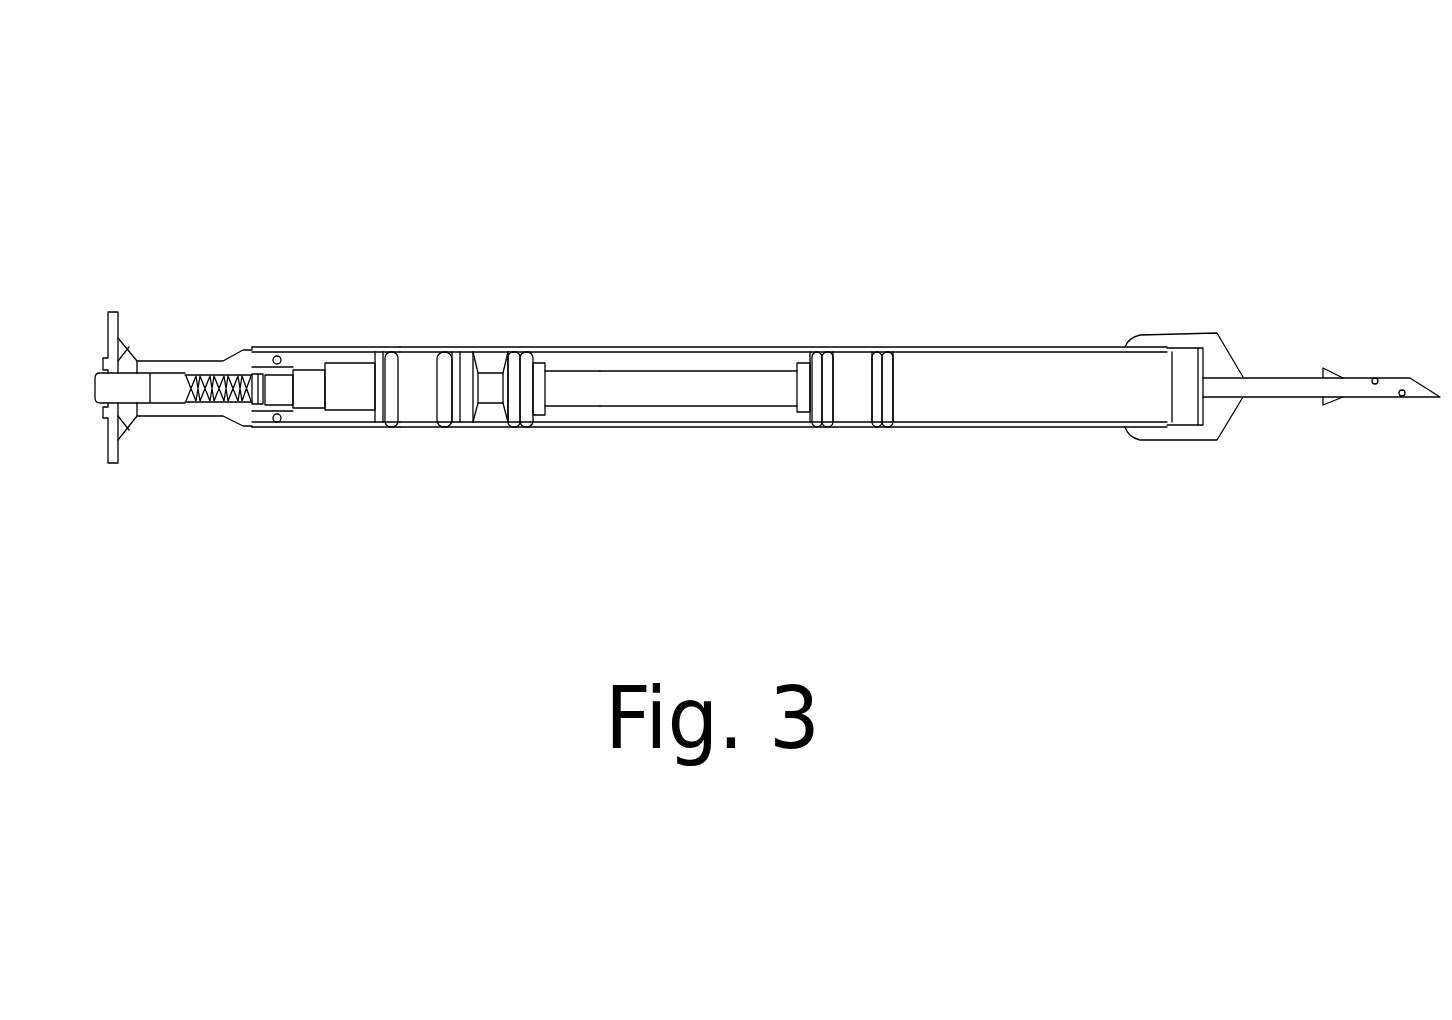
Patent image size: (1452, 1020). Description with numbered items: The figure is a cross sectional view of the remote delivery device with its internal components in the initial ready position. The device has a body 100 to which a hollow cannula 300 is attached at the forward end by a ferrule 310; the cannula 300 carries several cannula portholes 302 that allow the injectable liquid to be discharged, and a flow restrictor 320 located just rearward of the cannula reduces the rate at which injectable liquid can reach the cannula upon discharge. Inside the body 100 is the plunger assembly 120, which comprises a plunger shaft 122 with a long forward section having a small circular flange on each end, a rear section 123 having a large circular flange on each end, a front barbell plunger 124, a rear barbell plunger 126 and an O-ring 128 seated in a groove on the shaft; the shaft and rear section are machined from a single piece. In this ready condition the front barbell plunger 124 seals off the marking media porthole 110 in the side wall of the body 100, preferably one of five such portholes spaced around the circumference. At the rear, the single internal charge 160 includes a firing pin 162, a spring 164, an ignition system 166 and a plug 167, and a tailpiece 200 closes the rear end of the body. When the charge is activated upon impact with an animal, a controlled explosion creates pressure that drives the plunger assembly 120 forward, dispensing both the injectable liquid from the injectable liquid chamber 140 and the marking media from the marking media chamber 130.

The body 100 is at (945, 348).
The marking media porthole 110 is at (848, 352).
The plunger assembly 120 is at (890, 433).
The plunger shaft 122 is at (718, 382).
The rear section 123 is at (488, 385).
The front barbell plunger 124 is at (848, 377).
The rear barbell plunger 126 is at (420, 365).
The O-ring 128 is at (528, 372).
The marking media chamber 130 is at (603, 362).
The injectable liquid chamber 140 is at (1018, 368).
The single internal charge 160 is at (370, 432).
The firing pin 162 is at (187, 381).
The spring 164 is at (253, 372).
The ignition system 166 is at (310, 387).
The plug 167 is at (358, 402).
The tailpiece 200 is at (131, 362).
The cannula 300 is at (1367, 393).
The cannula portholes 302 is at (1402, 390).
The ferrule 310 is at (1233, 357).
The flow restrictor 320 is at (1182, 360).